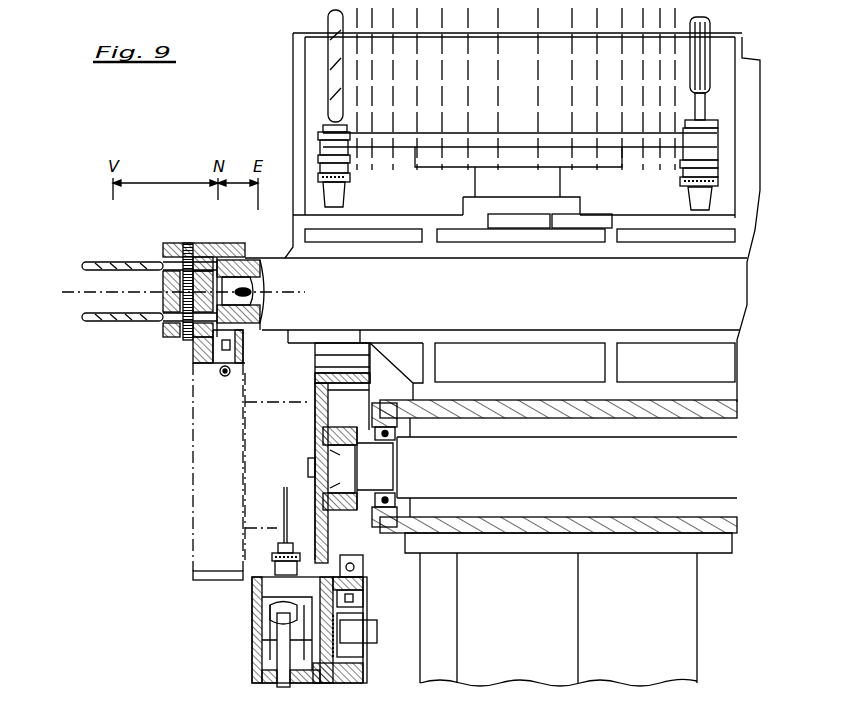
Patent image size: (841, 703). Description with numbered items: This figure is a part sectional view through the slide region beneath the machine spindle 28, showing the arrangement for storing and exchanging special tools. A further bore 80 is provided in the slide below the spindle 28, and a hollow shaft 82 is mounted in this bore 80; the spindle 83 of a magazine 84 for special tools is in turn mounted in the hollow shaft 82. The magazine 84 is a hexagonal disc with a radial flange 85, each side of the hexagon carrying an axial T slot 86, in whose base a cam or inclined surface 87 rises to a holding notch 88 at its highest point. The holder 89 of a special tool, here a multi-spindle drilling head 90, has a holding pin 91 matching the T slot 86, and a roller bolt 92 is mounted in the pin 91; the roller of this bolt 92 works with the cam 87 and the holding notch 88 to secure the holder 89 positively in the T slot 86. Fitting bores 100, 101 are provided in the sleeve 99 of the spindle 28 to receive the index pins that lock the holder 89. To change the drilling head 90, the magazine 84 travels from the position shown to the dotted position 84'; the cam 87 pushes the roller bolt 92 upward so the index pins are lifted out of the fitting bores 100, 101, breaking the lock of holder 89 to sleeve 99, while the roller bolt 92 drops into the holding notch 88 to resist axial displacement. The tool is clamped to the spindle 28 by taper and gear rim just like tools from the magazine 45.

The magazine 45 is at (590, 135).
The spindle 28 is at (261, 281).
The holding notch 88 is at (348, 365).
The T slot 86 is at (372, 365).
The radial flange 85 is at (367, 378).
The cam or inclined surface 87 is at (330, 376).
The magazine for special tools 84 is at (321, 468).
The magazine position 84' is at (193, 471).
The spindle of the magazine 83 is at (585, 464).
The hollow shaft 82 is at (518, 526).
The further bore 80 is at (404, 536).
The holder 89 is at (221, 243).
The multi-spindle drilling head 90 is at (158, 346).
The holding pin 91 is at (196, 362).
The roller bolt 92 is at (216, 380).
The sleeve of spindle 99 is at (558, 688).
The fitting bore 100 is at (610, 695).
The fitting bore 101 is at (495, 695).